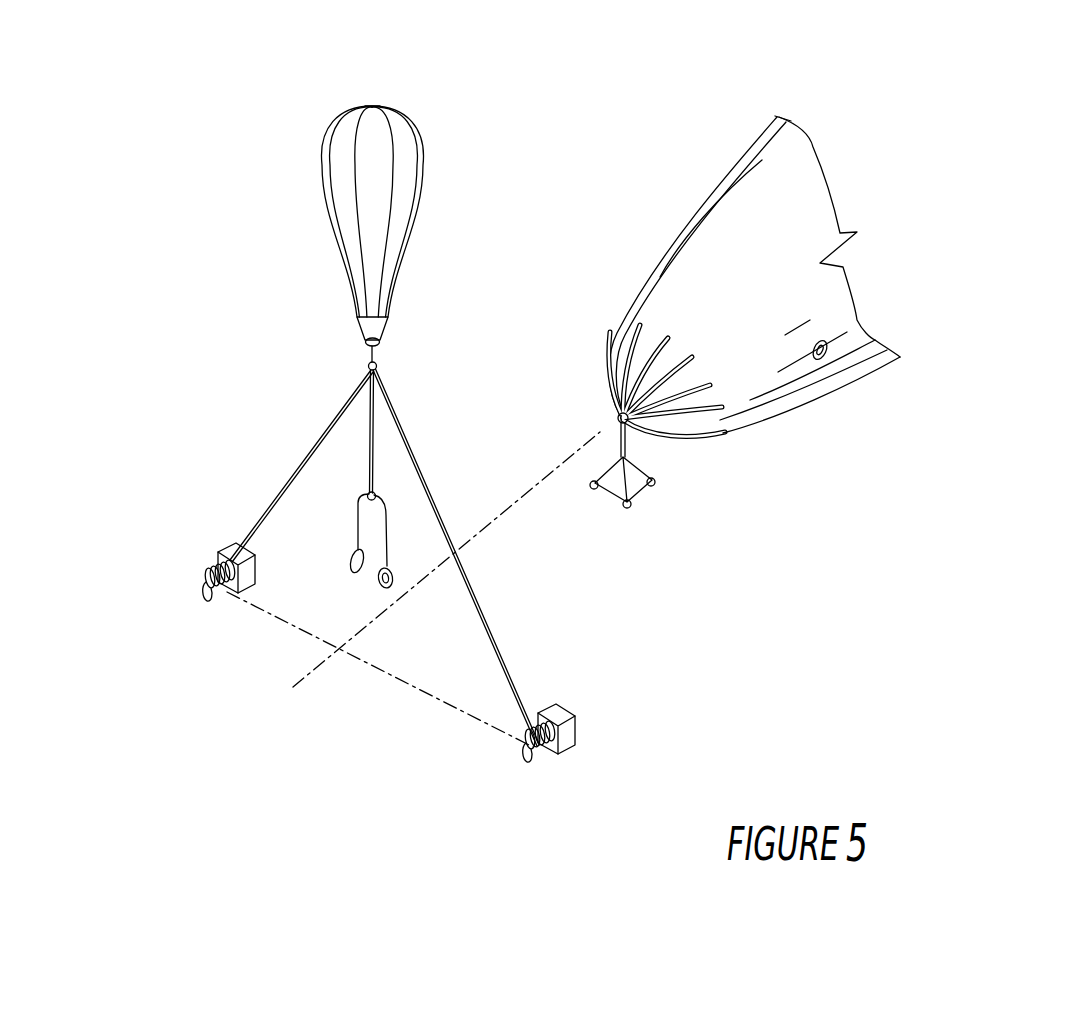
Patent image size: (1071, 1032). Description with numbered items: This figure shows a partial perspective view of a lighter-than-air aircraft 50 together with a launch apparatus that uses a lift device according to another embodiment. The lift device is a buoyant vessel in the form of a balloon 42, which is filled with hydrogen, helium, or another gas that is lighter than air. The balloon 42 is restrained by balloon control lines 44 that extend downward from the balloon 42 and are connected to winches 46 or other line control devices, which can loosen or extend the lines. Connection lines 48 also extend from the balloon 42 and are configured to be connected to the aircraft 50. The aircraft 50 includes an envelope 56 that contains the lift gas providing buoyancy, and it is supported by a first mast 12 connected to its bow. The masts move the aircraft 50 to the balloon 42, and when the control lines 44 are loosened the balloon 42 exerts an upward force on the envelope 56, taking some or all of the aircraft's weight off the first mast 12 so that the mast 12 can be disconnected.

The first mast 12 is at (638, 492).
The balloon 42 is at (413, 223).
The balloon control lines 44 is at (276, 497).
The winches 46 is at (205, 571).
The connection lines 48 is at (352, 542).
The aircraft 50 is at (774, 246).
The envelope 56 is at (827, 395).